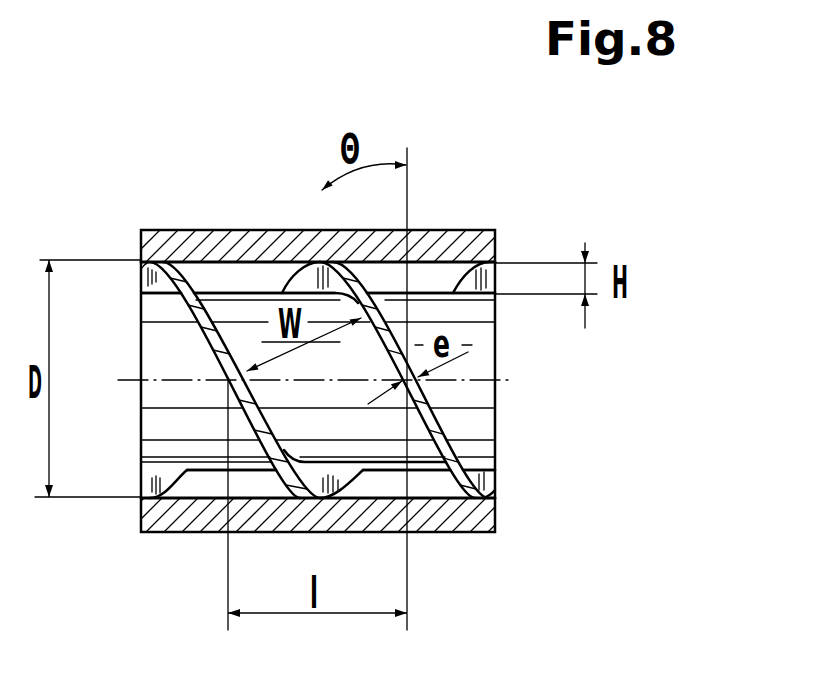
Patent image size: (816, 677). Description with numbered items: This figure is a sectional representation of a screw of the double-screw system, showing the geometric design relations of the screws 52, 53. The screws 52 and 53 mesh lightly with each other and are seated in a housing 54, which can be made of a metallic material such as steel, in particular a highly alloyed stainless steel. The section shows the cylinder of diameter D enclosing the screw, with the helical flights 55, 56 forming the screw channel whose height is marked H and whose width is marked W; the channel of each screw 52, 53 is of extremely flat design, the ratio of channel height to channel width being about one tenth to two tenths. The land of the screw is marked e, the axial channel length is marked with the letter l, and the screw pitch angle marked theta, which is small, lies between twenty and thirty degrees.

The screw 52 is at (186, 420).
The screw 53 is at (316, 454).
The housing 54 is at (449, 518).
The helical flight (blade) 55 is at (317, 262).
The helical flight (blade) 56 is at (350, 270).